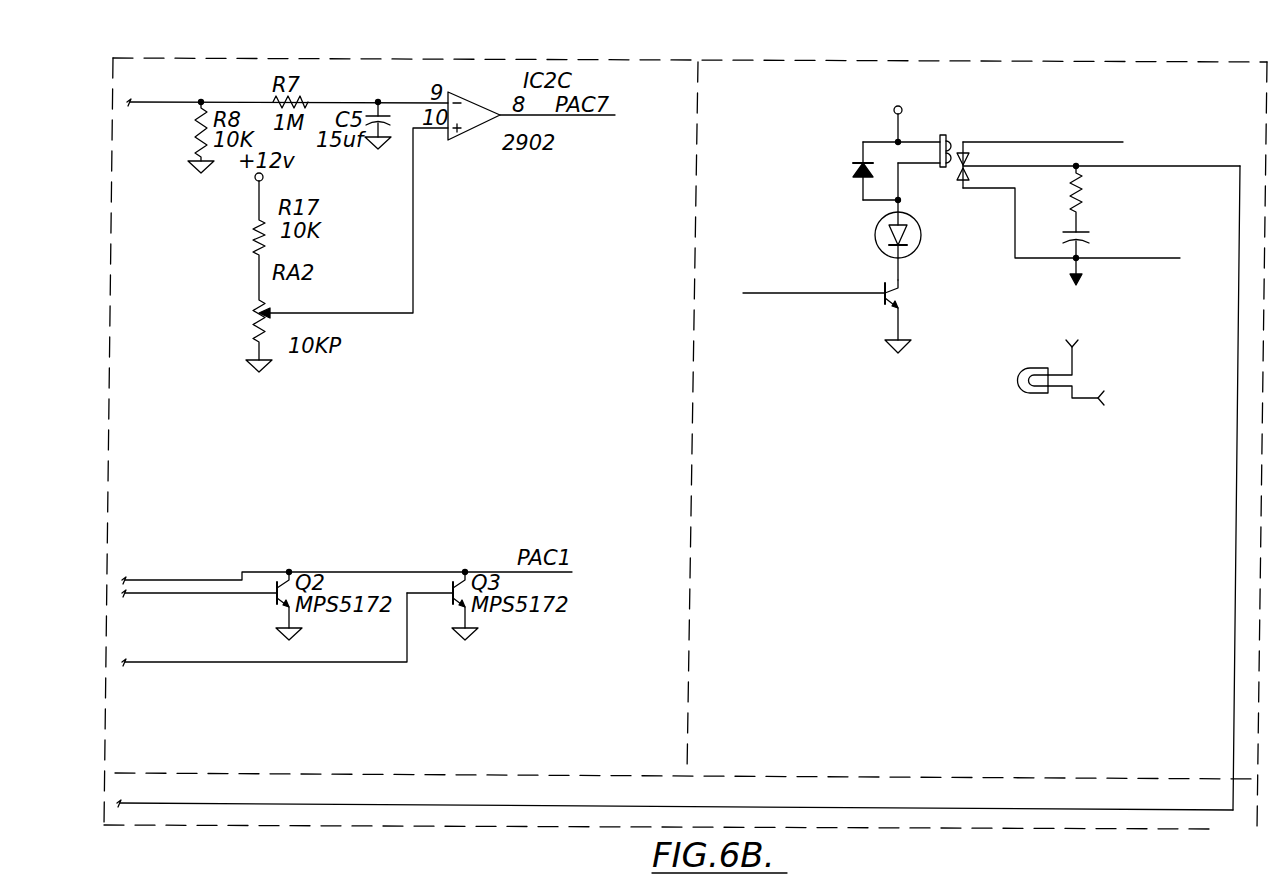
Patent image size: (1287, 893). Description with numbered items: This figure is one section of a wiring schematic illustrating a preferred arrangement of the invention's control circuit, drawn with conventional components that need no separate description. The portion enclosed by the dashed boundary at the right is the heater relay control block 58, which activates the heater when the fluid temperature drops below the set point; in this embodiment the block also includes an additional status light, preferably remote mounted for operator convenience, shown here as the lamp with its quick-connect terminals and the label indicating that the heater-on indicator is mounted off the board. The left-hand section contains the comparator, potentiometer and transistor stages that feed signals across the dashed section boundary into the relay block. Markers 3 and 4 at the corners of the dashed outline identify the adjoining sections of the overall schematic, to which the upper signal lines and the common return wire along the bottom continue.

The main control board section 3 is at (683, 428).
The heater relay control block 58 is at (878, 63).
The common return bus 4 is at (673, 828).